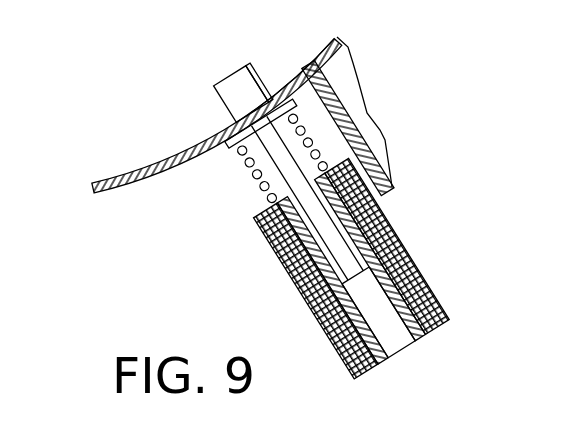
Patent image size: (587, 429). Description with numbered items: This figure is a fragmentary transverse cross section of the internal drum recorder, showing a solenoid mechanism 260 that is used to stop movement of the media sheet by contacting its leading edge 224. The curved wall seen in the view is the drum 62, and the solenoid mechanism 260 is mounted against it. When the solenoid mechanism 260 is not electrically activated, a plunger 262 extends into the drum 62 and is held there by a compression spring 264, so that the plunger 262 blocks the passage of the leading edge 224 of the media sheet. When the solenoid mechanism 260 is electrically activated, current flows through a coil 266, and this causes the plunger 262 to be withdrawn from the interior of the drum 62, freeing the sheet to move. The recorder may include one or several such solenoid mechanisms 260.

The drum 62 is at (123, 183).
The leading edge 224 is at (270, 84).
The plunger 262 is at (228, 78).
The compression spring 264 is at (300, 132).
The coil 266 is at (410, 250).
The solenoid mechanism 260 is at (450, 337).